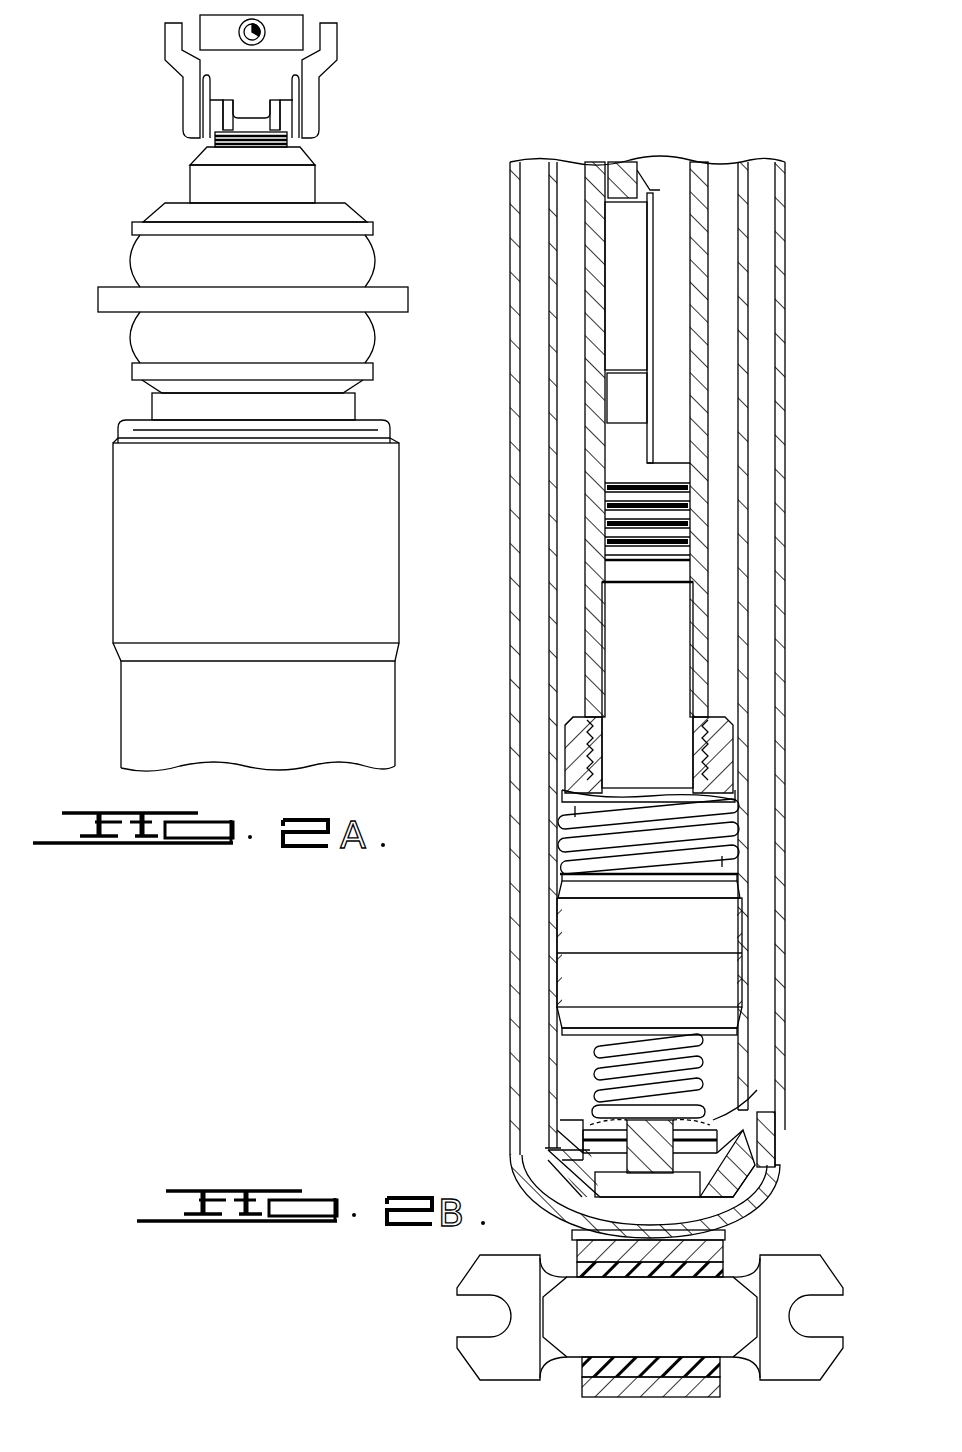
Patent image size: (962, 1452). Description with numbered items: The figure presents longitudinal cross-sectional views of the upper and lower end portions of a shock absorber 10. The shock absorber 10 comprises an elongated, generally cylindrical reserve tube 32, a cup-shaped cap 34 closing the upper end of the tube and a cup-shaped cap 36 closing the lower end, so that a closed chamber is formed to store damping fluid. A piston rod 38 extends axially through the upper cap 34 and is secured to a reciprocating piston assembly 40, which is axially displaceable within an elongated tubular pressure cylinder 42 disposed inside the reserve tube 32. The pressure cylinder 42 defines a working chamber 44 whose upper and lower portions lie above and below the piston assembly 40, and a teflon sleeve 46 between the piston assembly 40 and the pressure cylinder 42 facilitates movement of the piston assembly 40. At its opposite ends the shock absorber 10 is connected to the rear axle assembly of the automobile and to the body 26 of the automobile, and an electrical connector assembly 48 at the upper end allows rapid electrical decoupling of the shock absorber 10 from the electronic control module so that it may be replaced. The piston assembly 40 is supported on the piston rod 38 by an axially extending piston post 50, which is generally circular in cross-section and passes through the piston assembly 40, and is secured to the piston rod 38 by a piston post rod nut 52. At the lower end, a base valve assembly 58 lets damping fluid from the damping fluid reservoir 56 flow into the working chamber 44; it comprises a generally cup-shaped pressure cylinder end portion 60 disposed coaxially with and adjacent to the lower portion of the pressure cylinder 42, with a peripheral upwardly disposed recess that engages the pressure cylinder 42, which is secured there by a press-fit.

In FIG. 2A, the shock absorber 10 is at (468, 590).
In FIG. 2A, the body 26 is at (105, 298).
In FIG. 2A, the reserve tube 32 is at (131, 722).
In FIG. 2B, the reserve tube 32 is at (785, 208).
In FIG. 2A, the cap 34 is at (130, 420).
In FIG. 2B, the cap 36 is at (745, 1210).
In FIG. 2B, the piston rod 38 is at (702, 435).
In FIG. 2B, the piston assembly 40 is at (705, 954).
In FIG. 2B, the pressure cylinder 42 is at (741, 323).
In FIG. 2B, the working chamber 44 is at (718, 373).
In FIG. 2B, the teflon sleeve 46 is at (742, 945).
In FIG. 2A, the electrical connector assembly 48 is at (240, 80).
In FIG. 2B, the piston post 50 is at (690, 866).
In FIG. 2B, the piston post rod nut 52 is at (717, 740).
In FIG. 2B, the damping fluid reservoir 56 is at (758, 263).
In FIG. 2B, the base valve assembly 58 is at (720, 1125).
In FIG. 2B, the pressure cylinder end portion 60 is at (745, 1182).